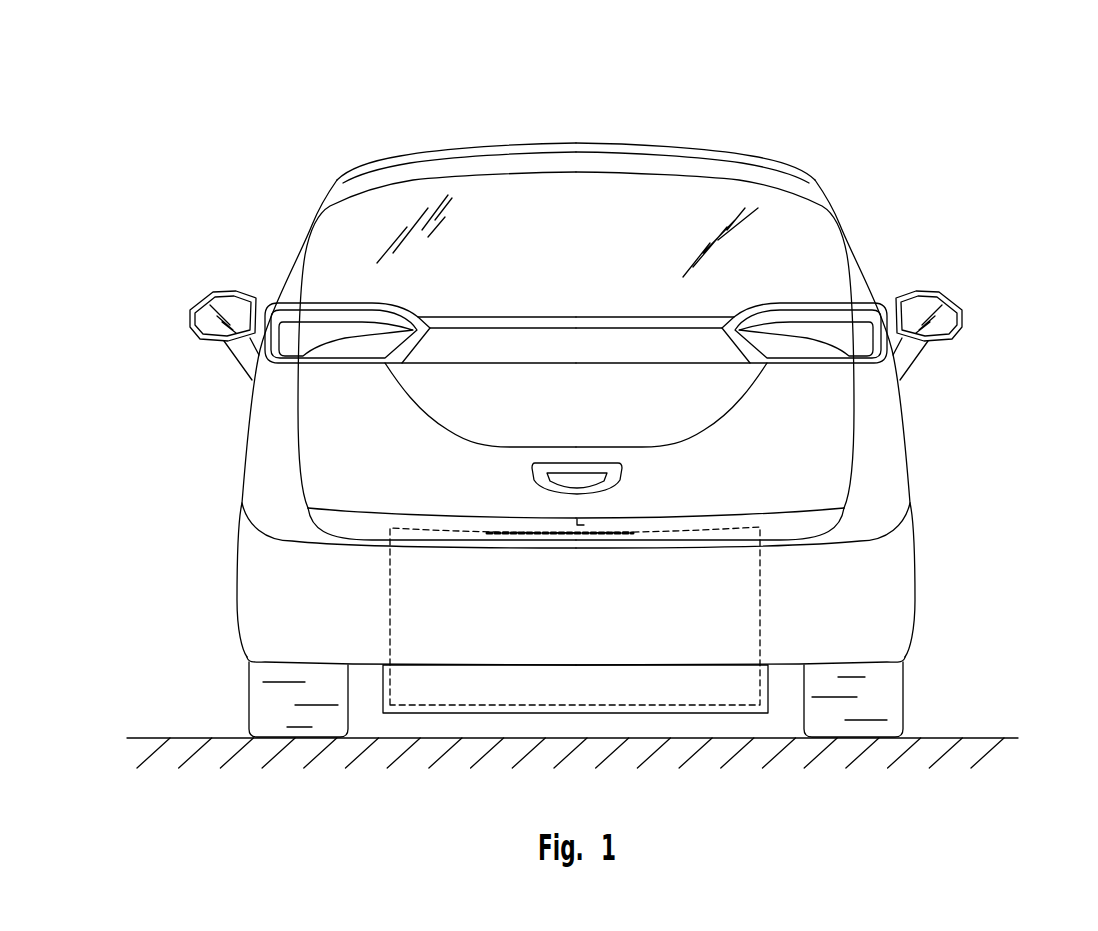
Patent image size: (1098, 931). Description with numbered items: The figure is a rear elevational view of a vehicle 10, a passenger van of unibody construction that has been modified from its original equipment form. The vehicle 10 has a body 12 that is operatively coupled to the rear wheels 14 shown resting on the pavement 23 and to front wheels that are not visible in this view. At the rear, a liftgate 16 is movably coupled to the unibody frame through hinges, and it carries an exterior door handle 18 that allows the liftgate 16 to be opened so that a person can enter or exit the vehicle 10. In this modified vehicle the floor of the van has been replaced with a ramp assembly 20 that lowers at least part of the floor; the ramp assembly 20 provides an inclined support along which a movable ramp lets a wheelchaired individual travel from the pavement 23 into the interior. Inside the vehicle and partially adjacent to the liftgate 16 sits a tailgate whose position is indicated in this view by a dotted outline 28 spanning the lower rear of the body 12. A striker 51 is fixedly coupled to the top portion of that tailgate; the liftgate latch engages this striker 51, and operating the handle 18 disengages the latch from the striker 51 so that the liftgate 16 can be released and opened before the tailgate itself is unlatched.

The vehicle 10 is at (890, 143).
The body 12 is at (262, 432).
The rear wheels 14 is at (260, 700).
The liftgate 16 is at (832, 441).
The exterior door handle 18 is at (550, 478).
The ramp assembly 20 is at (433, 713).
The pavement 23 is at (975, 738).
The dotted outline 28 is at (762, 607).
The striker 51 is at (584, 525).